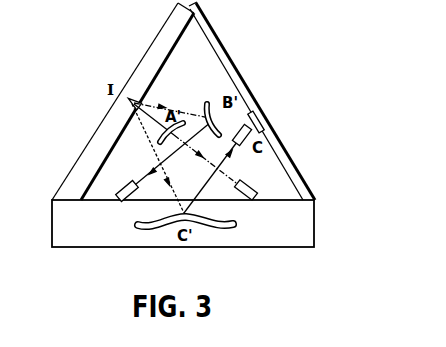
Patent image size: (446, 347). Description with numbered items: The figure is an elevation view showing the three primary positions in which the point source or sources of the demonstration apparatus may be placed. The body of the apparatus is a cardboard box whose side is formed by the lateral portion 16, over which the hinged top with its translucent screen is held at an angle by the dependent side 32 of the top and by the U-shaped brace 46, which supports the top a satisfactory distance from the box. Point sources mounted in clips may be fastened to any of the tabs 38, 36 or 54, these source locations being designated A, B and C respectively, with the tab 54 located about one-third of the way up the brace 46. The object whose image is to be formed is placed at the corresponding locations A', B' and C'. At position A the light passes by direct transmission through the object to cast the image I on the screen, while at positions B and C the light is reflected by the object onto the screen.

The lateral portion 16 is at (282, 247).
The dependent side 32 is at (97, 129).
The brace 46 is at (296, 170).
The tab 54 is at (258, 112).
The tab 36 is at (118, 198).
The tab 38 is at (256, 201).